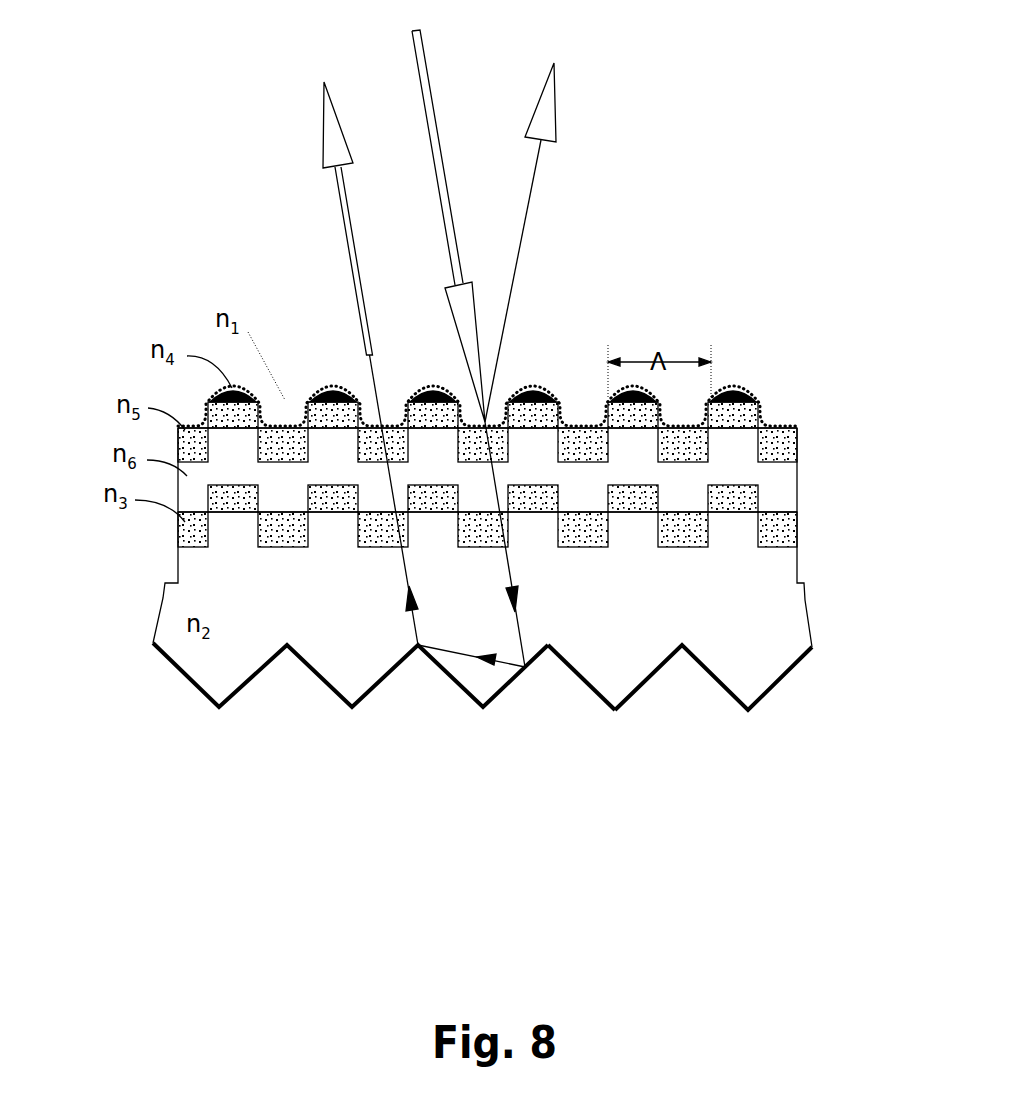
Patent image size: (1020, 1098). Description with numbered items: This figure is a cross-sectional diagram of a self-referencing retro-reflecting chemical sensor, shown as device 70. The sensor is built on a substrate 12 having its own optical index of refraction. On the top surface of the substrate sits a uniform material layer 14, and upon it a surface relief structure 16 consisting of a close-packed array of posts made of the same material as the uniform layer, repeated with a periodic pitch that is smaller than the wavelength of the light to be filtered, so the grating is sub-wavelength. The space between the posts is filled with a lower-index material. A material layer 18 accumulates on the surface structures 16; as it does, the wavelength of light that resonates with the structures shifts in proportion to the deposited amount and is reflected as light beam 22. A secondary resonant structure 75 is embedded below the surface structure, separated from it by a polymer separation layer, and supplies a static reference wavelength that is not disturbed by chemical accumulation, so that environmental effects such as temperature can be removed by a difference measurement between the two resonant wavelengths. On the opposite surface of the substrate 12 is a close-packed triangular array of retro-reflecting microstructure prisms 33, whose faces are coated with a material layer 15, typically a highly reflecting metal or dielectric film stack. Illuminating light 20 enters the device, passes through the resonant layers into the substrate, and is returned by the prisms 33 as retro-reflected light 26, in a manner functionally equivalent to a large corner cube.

The substrate 12 is at (787, 612).
The uniform material layer 14 is at (786, 437).
The material layer 15 is at (770, 690).
The surface relief structure 16 is at (755, 393).
The material layer 18 is at (733, 378).
The illuminating light 20 is at (425, 55).
The reflected light beam 22 is at (555, 112).
The retro-reflected light 26 is at (323, 127).
The retro-reflecting microstructure prisms 33 is at (617, 687).
The device 70 is at (457, 531).
The secondary resonant structure 75 is at (786, 505).